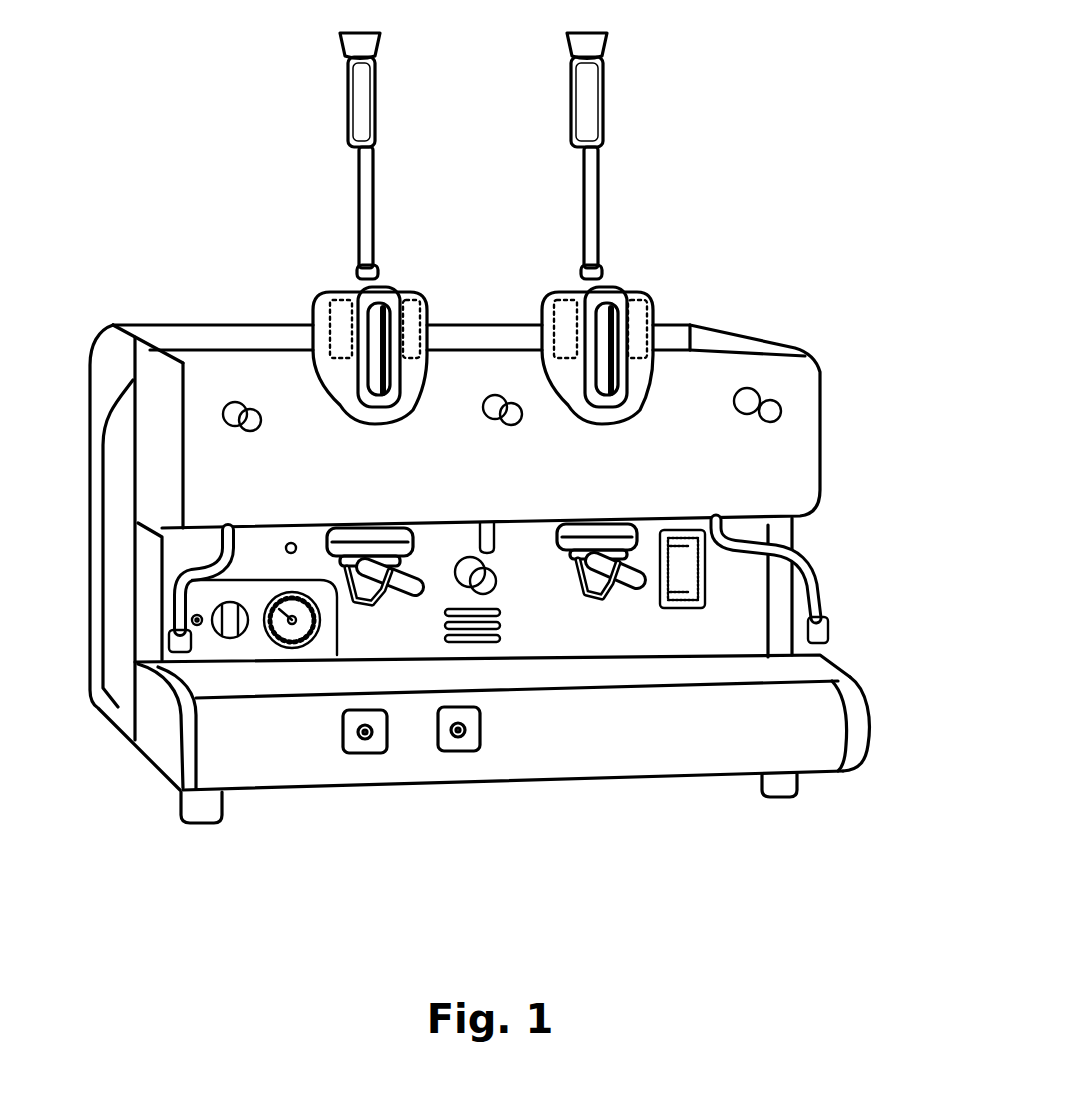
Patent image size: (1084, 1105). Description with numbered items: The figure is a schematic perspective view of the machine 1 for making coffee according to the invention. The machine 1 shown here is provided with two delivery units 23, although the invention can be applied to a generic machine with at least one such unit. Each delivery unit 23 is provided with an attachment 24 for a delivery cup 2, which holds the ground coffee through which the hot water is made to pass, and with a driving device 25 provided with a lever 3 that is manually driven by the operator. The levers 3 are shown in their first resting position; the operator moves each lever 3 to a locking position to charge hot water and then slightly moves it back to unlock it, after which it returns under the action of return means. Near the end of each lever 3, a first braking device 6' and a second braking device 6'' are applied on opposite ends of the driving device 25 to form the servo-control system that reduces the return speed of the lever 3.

The machine for making coffee 1 is at (113, 323).
The delivery cup 2 is at (343, 571).
The lever 3 is at (353, 174).
The first braking device 6' is at (419, 306).
The second braking device 6'' is at (542, 299).
The delivery unit 23 is at (138, 32).
The attachment 24 is at (347, 531).
The driving device 25 is at (347, 297).